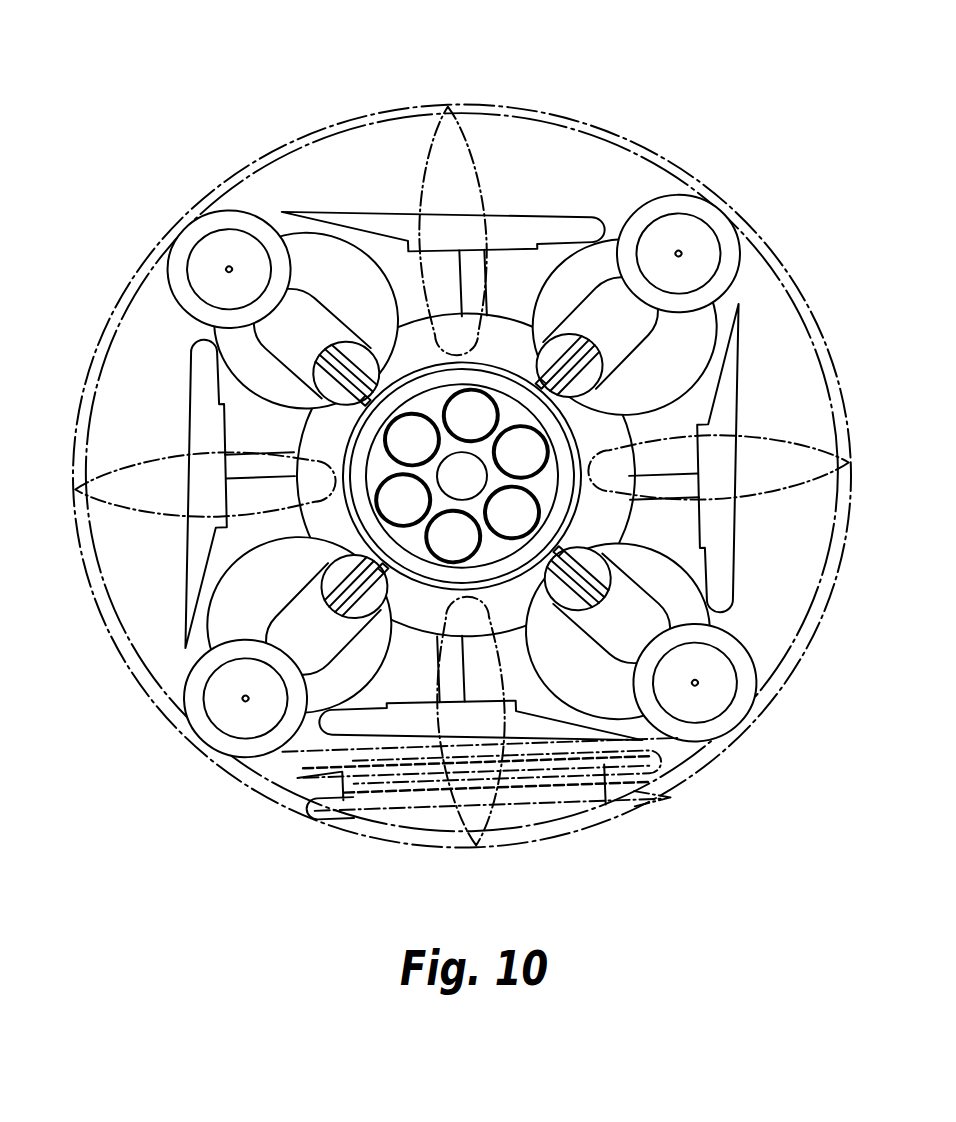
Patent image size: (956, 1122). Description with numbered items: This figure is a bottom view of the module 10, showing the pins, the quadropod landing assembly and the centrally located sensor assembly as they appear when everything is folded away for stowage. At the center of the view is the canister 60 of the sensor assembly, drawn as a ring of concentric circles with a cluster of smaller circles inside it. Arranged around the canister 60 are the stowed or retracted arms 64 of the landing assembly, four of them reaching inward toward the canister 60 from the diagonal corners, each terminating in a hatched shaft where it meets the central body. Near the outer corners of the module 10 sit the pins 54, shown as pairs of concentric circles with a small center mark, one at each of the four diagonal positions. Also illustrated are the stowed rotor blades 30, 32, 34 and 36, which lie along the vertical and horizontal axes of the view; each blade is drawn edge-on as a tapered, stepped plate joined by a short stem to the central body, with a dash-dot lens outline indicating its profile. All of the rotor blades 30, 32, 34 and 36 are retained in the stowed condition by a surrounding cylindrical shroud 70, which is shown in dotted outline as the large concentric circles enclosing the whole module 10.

The module 10 is at (337, 97).
The rotor blade 30 is at (737, 553).
The rotor blade 32 is at (480, 186).
The rotor blade 34 is at (187, 572).
The rotor blade 36 is at (403, 730).
The pins 54 is at (197, 263).
The canister 60 is at (583, 440).
The arms 64 is at (313, 317).
The cylindrical shroud 70 is at (627, 140).